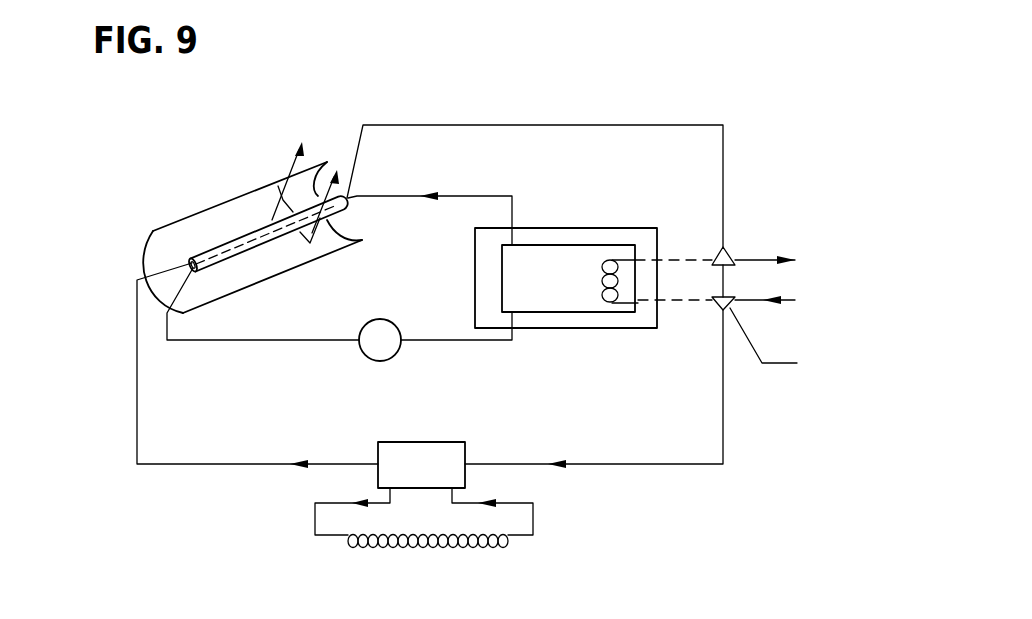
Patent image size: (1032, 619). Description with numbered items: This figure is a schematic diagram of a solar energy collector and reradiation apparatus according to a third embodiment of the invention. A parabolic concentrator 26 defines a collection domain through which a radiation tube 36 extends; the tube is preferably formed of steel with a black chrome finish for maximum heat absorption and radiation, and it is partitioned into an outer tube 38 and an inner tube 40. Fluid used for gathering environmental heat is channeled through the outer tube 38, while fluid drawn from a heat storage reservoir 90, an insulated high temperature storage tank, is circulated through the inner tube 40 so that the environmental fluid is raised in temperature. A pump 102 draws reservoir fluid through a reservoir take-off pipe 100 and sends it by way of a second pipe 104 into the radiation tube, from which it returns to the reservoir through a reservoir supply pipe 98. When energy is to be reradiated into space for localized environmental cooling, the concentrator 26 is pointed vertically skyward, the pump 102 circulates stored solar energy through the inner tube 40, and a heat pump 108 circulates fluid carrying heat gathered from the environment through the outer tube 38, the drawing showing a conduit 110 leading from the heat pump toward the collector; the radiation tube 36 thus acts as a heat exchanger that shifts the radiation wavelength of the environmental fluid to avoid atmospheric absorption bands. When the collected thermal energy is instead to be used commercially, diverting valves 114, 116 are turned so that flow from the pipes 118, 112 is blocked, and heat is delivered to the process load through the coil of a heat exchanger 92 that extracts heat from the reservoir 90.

The concentrator 26 is at (178, 233).
The radiation tube 36 is at (278, 188).
The outer tube 38 is at (232, 263).
The inner tube 40 is at (273, 237).
The heat storage reservoir 90 is at (550, 292).
The heat exchanger 92 is at (603, 291).
The reservoir supply pipe 98 is at (512, 207).
The reservoir take-off pipe 100 is at (461, 337).
The pump 102 is at (382, 362).
The second pipe 104 is at (286, 337).
The heat pump 108 is at (470, 431).
The conduit from heat pump to collector 110 is at (246, 463).
The pipe 112 is at (723, 380).
The diverting valve 114 is at (725, 253).
The diverting valve 116 is at (717, 305).
The pipe 118 is at (607, 127).